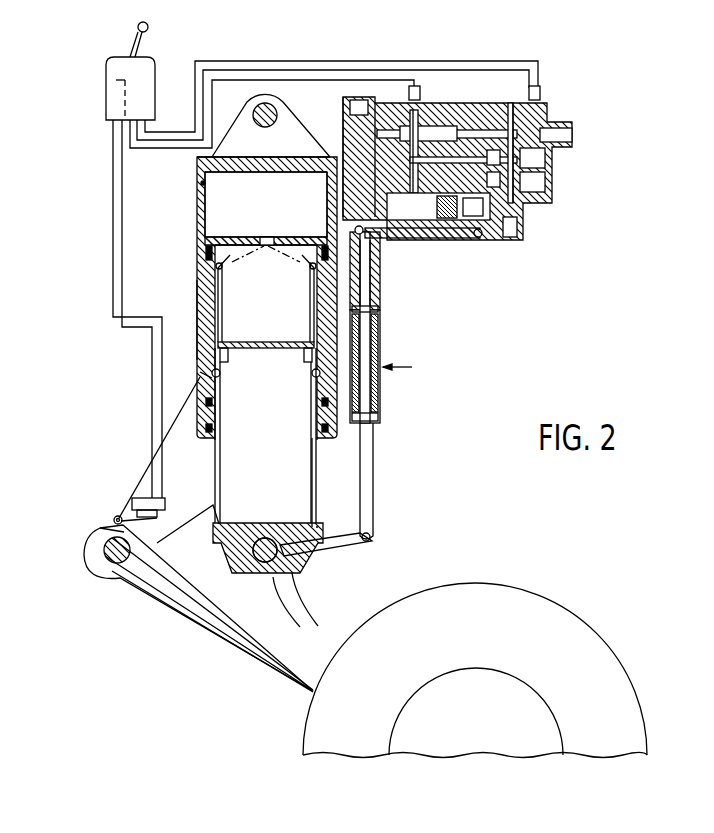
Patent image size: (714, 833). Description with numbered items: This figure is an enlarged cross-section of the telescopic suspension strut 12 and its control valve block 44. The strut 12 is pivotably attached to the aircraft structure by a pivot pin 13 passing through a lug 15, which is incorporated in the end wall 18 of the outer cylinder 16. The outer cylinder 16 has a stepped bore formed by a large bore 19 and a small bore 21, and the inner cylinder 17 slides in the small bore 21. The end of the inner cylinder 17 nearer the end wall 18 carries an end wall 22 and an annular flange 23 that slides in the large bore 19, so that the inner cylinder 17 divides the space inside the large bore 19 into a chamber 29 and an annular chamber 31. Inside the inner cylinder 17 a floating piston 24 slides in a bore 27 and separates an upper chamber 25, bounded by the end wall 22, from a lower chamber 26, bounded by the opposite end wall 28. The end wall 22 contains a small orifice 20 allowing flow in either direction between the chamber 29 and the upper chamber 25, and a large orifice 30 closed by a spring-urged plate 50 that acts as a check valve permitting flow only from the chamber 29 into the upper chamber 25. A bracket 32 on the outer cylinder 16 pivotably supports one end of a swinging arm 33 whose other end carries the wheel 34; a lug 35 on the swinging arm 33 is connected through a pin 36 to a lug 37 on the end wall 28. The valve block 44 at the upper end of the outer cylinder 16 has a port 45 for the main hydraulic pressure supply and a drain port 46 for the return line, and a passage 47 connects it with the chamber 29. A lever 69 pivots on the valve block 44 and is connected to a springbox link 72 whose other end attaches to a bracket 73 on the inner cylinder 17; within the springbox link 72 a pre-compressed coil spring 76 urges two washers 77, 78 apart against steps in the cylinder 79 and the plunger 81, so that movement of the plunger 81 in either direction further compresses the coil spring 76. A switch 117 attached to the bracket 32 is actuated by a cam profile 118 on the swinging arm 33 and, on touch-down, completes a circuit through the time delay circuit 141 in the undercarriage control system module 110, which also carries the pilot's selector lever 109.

The telescopic suspension strut 12 is at (195, 340).
The pivot pin 13 is at (265, 103).
The lug 15 is at (247, 130).
The outer cylinder 16 is at (197, 232).
The inner cylinder 17 is at (316, 460).
The end wall 18 is at (268, 163).
The large bore 19 is at (203, 183).
The small orifice 20 is at (206, 232).
The small bore 21 is at (212, 375).
The end wall 22 is at (250, 243).
The annular flange 23 is at (205, 262).
The floating piston 24 is at (297, 350).
The upper chamber 25 is at (266, 302).
The lower chamber 26 is at (265, 435).
The bore 27 is at (318, 492).
The end wall 28 is at (253, 523).
The chamber 29 is at (293, 204).
The large orifice 30 is at (268, 233).
The annular chamber 31 is at (205, 300).
The bracket 32 is at (172, 418).
The swinging arm 33 is at (193, 622).
The wheel 34 is at (586, 628).
The lug 35 is at (279, 594).
The pin 36 is at (287, 558).
The lug 37 is at (232, 552).
The valve block 44 is at (449, 91).
The port 45 is at (518, 232).
The drain port 46 is at (572, 136).
The passage 47 is at (337, 160).
The plate 50 is at (273, 240).
The lever 69 is at (380, 240).
The springbox link 72 is at (396, 327).
The bracket 73 is at (368, 541).
The coil spring 76 is at (381, 330).
The washer 77 is at (381, 310).
The washer 78 is at (381, 423).
The cylinder 79 is at (380, 278).
The plunger 81 is at (371, 457).
The selector lever 109 is at (149, 22).
The undercarriage control system module 110 is at (128, 56).
The switch 117 is at (150, 466).
The cam profile 118 is at (114, 518).
The time delay circuit 141 is at (107, 92).